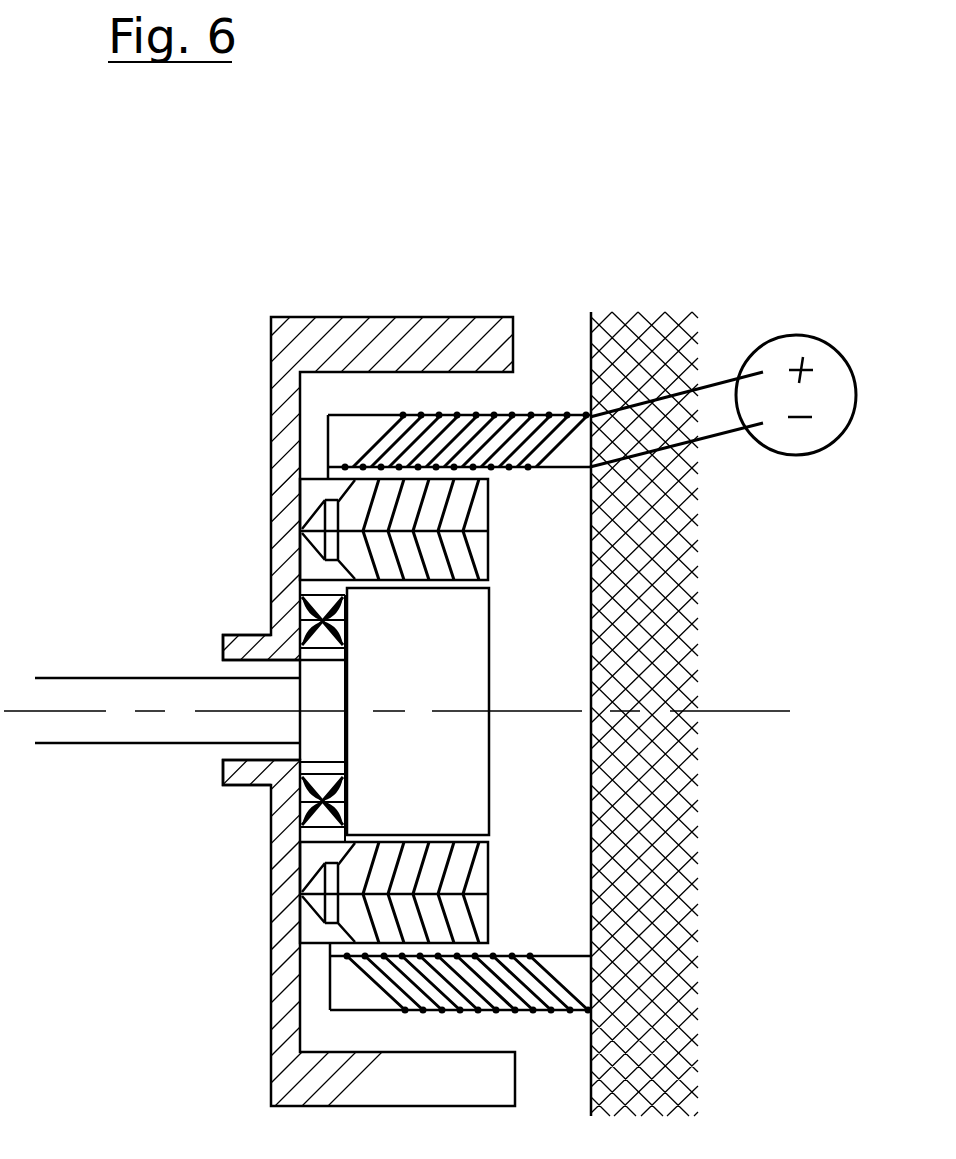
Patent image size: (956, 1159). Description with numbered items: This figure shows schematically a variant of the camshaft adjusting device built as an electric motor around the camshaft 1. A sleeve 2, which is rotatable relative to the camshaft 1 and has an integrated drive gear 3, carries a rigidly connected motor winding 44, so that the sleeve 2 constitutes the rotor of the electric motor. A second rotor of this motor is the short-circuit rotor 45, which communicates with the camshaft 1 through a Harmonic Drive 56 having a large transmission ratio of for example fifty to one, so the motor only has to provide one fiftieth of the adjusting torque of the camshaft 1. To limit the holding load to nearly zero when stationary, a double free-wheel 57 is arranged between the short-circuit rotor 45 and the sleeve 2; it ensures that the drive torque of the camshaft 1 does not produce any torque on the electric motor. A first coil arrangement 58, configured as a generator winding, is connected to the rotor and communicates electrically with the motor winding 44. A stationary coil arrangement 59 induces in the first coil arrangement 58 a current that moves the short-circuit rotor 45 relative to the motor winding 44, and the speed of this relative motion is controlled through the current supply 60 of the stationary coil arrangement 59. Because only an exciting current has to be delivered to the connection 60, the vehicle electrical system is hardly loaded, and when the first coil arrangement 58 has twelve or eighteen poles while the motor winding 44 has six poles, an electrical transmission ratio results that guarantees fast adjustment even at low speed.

The camshaft 1 is at (111, 726).
The sleeve 2 is at (223, 638).
The drive gear 3 is at (351, 340).
The motor winding 44 is at (488, 555).
The short-circuit rotor 45 is at (445, 745).
The Harmonic Drive 56 is at (318, 751).
The double free-wheel 57 is at (318, 612).
The first coil arrangement 58 is at (324, 499).
The stationary coil arrangement 59 is at (507, 427).
The current supply 60 is at (840, 438).